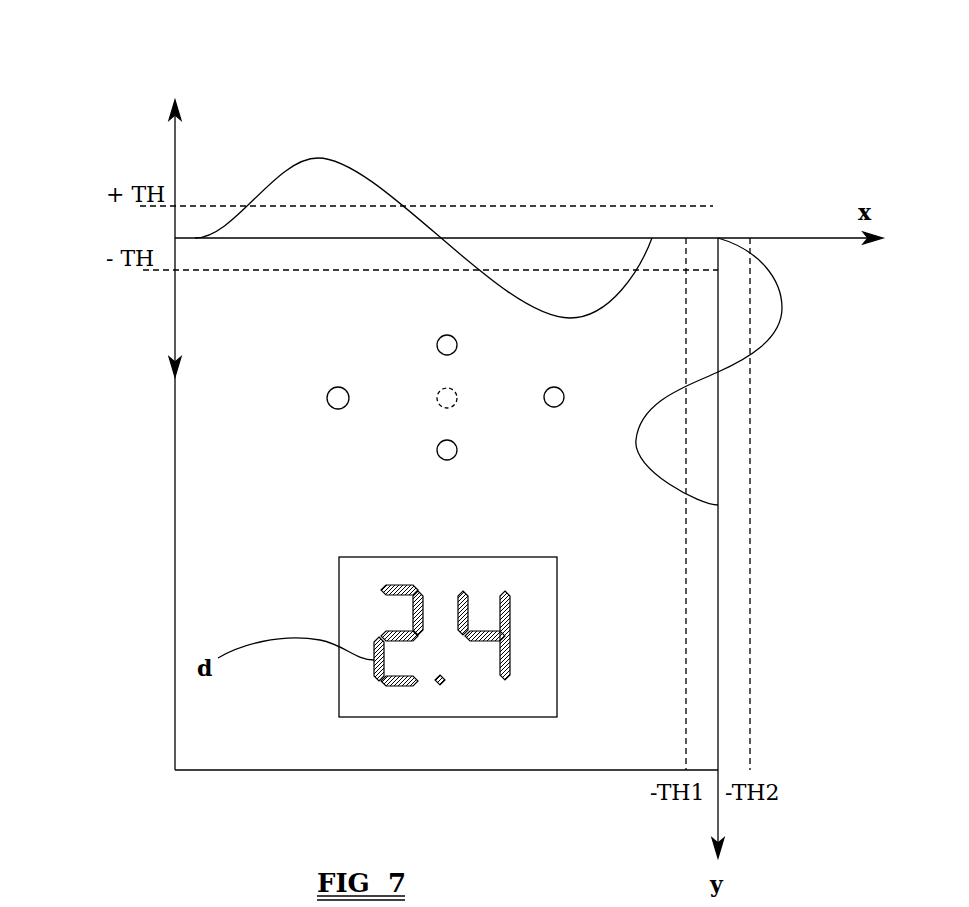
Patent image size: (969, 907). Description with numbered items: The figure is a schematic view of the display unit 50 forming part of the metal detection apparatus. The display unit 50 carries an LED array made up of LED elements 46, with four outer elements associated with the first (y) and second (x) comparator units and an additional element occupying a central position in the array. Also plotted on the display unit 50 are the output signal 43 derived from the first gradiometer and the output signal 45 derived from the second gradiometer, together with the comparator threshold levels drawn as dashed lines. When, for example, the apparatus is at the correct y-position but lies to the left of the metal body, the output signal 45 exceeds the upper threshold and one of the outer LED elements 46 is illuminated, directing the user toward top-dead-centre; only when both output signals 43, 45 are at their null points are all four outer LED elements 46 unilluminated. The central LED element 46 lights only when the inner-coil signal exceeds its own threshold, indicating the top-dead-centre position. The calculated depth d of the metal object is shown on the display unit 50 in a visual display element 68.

The output signal 43 is at (782, 308).
The output signal 45 is at (320, 157).
The LED elements 46 is at (675, 327).
The display unit 50 is at (150, 500).
The visual display element 68 is at (557, 610).